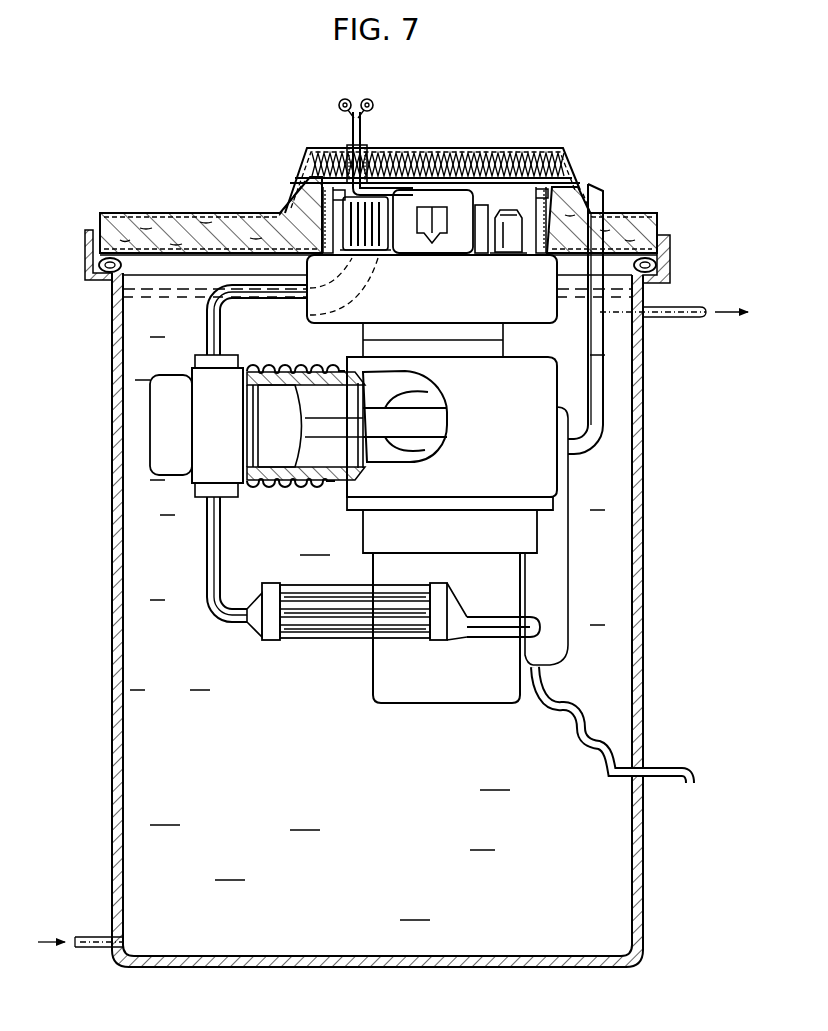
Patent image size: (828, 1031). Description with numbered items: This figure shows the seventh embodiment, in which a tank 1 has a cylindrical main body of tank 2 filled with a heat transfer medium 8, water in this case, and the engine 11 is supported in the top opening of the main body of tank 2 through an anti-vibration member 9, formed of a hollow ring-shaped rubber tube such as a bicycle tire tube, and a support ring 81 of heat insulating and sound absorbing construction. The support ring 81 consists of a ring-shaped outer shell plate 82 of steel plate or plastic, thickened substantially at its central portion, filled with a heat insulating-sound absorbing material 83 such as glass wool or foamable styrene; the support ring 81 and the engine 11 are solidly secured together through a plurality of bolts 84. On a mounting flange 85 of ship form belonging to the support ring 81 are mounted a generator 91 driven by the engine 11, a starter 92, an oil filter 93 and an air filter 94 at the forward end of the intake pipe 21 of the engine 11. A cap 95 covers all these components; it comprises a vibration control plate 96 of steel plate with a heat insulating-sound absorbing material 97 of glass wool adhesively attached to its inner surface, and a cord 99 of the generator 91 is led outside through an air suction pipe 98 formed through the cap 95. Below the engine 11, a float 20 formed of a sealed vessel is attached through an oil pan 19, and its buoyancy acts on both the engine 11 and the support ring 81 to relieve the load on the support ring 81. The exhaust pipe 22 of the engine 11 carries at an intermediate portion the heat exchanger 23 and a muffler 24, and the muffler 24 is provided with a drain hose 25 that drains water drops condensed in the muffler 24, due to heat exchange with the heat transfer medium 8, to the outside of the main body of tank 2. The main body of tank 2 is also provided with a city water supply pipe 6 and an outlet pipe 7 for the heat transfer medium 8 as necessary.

The tank 1 is at (660, 600).
The main body of tank 2 is at (645, 680).
The city water supply pipe 6 is at (86, 937).
The outlet pipe 7 is at (690, 318).
The heat transfer medium 8 is at (632, 845).
The anti-vibration member 9 is at (658, 264).
The engine 11 is at (292, 498).
The oil pan 19 is at (362, 552).
The float 20 is at (425, 710).
The intake pipe 21 is at (207, 331).
The exhaust pipe 22 is at (596, 445).
The heat exchanger 23 is at (318, 643).
The muffler 24 is at (572, 570).
The drain hose 25 is at (572, 740).
The support ring 81 is at (218, 166).
The outer shell plate 82 is at (187, 222).
The heat insulating-sound absorbing material 83 is at (214, 222).
The bolts 84 is at (543, 256).
The mounting flange 85 is at (419, 265).
The generator 91 is at (449, 259).
The starter 92 is at (479, 259).
The oil filter 93 is at (508, 259).
The air filter 94 is at (381, 257).
The cap 95 is at (556, 108).
The vibration control plate 96 is at (518, 150).
The heat insulating-sound absorbing material 97 is at (548, 150).
The air suction pipe 98 is at (368, 148).
The cord 99 is at (352, 134).